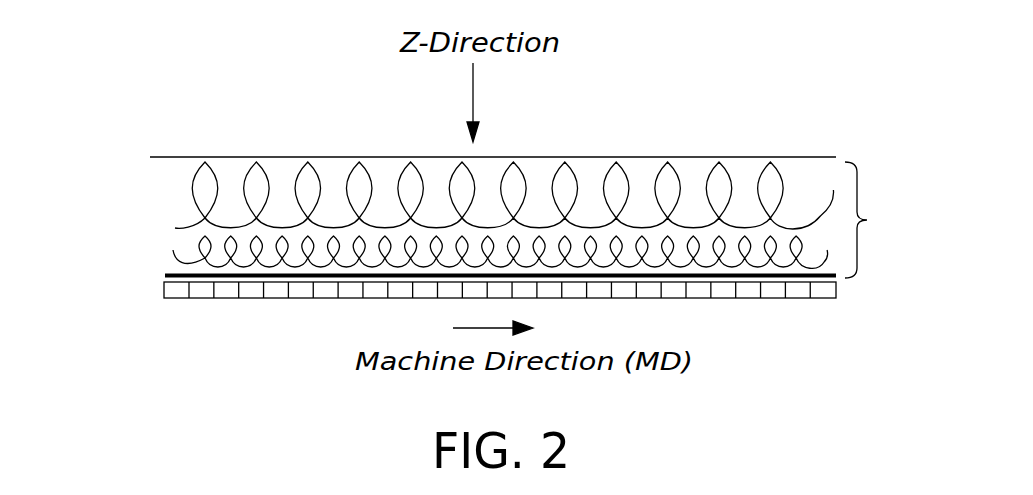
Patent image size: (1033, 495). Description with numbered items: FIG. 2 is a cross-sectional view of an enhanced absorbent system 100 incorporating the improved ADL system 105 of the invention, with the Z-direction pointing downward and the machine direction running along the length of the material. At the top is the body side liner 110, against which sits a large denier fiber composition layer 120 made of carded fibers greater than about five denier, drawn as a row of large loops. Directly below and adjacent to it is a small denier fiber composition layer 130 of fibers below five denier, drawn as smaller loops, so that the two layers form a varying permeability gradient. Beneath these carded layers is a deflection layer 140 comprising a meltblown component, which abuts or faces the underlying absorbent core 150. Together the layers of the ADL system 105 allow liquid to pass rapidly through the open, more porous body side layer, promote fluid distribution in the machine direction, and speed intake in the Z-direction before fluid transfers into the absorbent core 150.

The enhanced absorbent system 100 is at (697, 122).
The ADL system 105 is at (882, 220).
The body side liner 110 is at (152, 157).
The large denier fiber composition layer 120 is at (175, 228).
The small denier fiber composition layer 130 is at (172, 250).
The deflection layer 140 is at (165, 276).
The absorbent core 150 is at (164, 291).